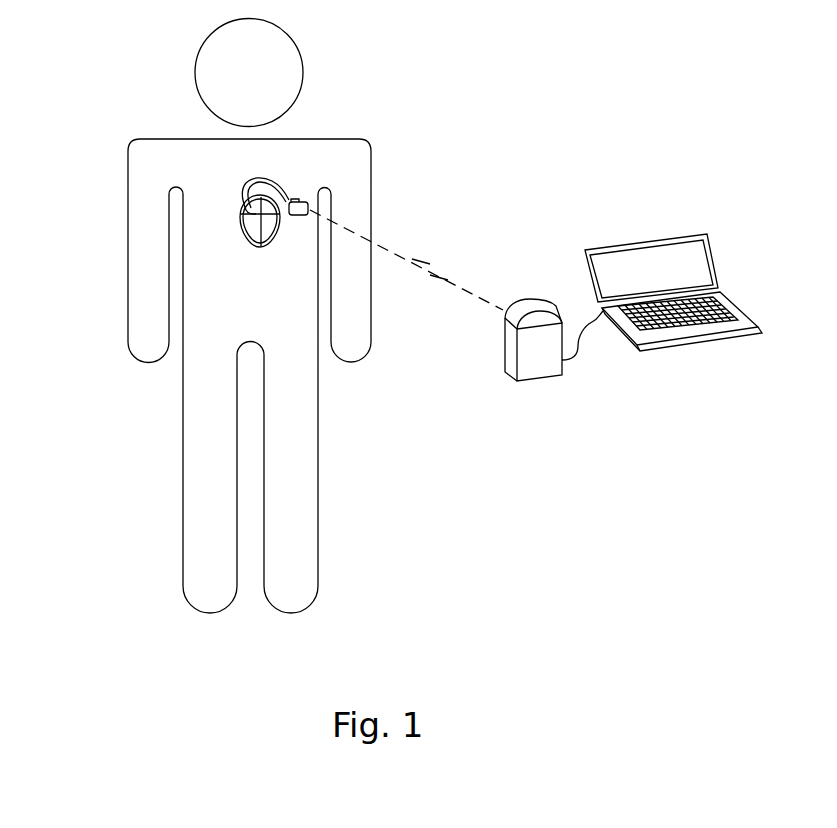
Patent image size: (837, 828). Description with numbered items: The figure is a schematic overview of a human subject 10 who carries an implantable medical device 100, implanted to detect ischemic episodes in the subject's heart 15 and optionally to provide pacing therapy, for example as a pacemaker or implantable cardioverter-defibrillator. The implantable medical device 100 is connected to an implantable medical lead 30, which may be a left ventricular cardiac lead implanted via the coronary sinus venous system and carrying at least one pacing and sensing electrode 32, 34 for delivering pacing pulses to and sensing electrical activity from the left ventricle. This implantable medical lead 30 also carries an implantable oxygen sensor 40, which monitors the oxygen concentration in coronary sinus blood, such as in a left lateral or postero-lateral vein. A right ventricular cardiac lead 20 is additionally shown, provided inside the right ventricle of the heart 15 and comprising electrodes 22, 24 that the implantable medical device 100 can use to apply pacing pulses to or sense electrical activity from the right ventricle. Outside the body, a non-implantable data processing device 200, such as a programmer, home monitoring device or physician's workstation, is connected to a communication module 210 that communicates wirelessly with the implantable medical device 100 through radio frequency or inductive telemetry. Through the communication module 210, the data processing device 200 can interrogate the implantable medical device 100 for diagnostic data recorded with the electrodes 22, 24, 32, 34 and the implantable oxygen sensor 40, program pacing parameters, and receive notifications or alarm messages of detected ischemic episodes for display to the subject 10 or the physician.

The human subject 10 is at (370, 139).
The heart 15 is at (262, 247).
The right ventricular cardiac lead 20 is at (247, 185).
The electrode 22 is at (255, 243).
The electrode 24 is at (247, 240).
The implantable medical lead 30 is at (252, 189).
The electrode 32 is at (272, 243).
The electrode 34 is at (278, 235).
The implantable oxygen sensor 40 is at (243, 206).
The implantable medical device 100 is at (300, 199).
The data processing device 200 is at (742, 313).
The communication module 210 is at (512, 376).